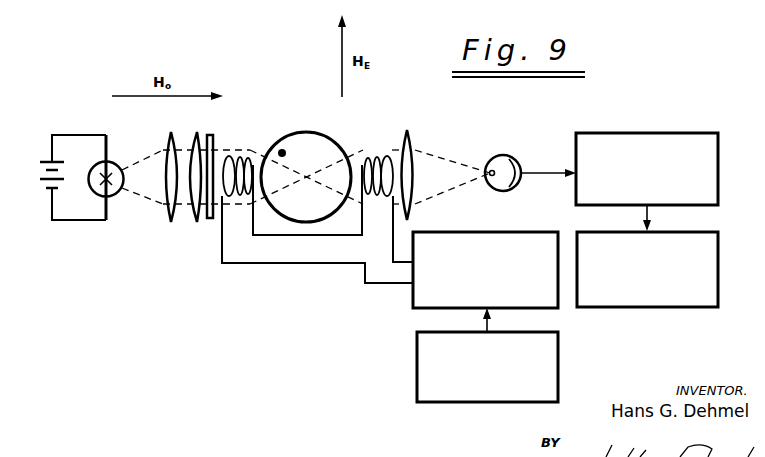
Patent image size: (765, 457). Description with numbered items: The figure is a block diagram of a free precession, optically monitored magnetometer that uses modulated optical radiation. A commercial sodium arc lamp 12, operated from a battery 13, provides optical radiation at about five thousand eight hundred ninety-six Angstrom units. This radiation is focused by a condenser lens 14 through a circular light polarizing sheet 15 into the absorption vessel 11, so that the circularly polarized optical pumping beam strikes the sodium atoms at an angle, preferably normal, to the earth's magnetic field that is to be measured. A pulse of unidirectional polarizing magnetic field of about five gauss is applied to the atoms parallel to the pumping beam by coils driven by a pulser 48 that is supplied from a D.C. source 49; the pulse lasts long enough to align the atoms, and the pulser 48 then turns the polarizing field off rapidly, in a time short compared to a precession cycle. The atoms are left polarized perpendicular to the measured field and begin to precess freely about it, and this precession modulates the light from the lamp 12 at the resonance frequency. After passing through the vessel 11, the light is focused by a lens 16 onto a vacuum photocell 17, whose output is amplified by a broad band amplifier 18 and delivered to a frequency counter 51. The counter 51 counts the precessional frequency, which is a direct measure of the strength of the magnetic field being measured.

The absorption vessel 11 is at (299, 130).
The sodium arc lamp 12 is at (112, 166).
The battery 13 is at (36, 168).
The condenser lens 14 is at (177, 140).
The circular light polarizing sheet 15 is at (210, 134).
The lens 16 is at (412, 148).
The vacuum photocell 17 is at (508, 157).
The broad band amplifier 18 is at (641, 134).
The pulser 48 is at (413, 291).
The source 49 is at (417, 368).
The frequency counter 51 is at (712, 265).